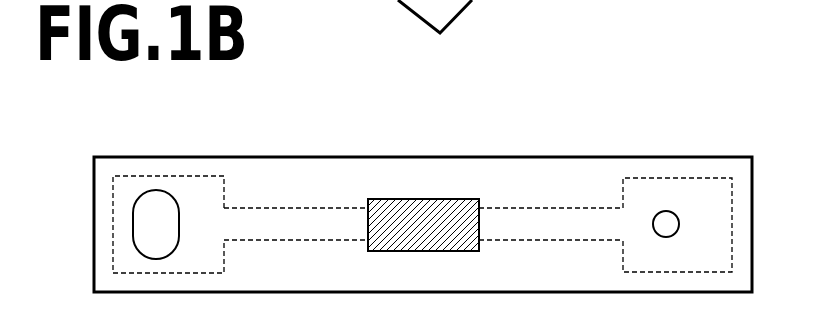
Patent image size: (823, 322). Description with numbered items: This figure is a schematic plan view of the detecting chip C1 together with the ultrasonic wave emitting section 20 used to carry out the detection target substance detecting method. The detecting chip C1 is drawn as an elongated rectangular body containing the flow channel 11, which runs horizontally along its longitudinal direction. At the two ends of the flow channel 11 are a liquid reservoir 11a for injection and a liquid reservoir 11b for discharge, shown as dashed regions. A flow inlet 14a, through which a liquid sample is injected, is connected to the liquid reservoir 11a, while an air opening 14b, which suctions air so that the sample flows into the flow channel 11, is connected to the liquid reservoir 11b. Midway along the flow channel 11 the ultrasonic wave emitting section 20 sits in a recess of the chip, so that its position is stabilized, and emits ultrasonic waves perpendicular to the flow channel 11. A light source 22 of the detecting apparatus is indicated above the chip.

The flow channel 11 is at (513, 208).
The liquid reservoir for injection 11a is at (204, 178).
The liquid reservoir for discharge 11b is at (713, 176).
The flow inlet 14a is at (154, 200).
The air opening 14b is at (663, 218).
The ultrasonic wave emitting section 20 is at (424, 207).
The light source 22 is at (457, 14).
The detecting chip C1 is at (105, 131).